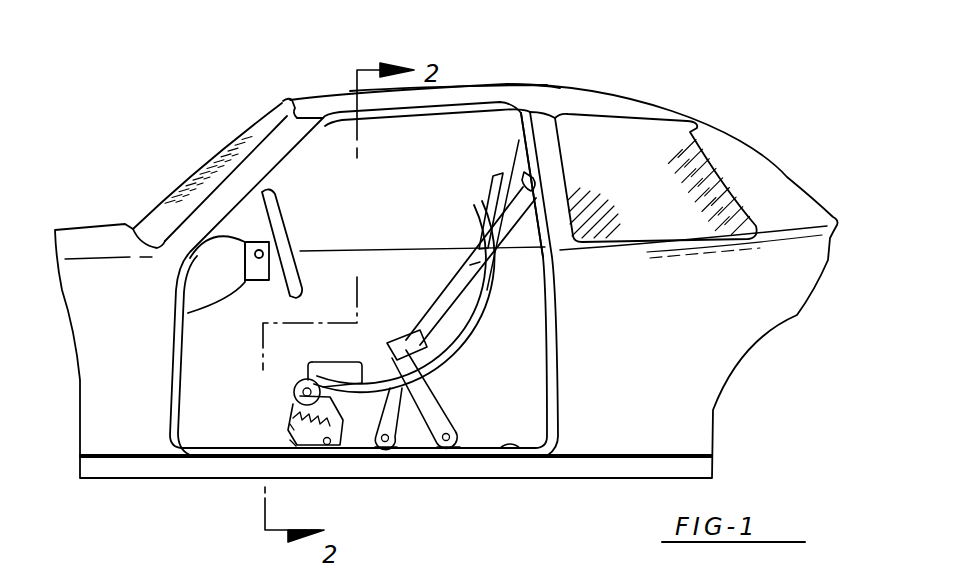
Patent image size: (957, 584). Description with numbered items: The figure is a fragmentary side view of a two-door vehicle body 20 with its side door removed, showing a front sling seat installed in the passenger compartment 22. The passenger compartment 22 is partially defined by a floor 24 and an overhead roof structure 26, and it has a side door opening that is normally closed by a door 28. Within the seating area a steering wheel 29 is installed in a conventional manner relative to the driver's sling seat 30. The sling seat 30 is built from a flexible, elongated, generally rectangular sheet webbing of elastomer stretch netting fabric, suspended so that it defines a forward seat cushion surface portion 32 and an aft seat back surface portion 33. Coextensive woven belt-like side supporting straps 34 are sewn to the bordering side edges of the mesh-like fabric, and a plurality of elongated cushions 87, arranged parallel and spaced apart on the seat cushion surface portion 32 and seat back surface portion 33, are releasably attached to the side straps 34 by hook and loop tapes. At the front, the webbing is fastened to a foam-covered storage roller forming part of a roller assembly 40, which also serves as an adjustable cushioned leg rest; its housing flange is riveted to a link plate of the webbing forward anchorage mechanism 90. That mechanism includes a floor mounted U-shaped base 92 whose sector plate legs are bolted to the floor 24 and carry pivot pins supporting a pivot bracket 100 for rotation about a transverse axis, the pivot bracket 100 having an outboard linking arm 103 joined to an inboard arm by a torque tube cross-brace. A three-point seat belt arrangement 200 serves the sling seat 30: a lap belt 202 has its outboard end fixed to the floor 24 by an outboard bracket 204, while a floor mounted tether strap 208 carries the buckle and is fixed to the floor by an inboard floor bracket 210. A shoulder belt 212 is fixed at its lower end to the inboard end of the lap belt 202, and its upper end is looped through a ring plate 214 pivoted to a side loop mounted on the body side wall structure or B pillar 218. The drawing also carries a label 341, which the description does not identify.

The vehicle body 20 is at (693, 104).
The passenger compartment 22 is at (180, 433).
The floor 24 is at (510, 445).
The overhead roof structure 26 is at (547, 85).
The door 28 is at (547, 360).
The steering wheel 29 is at (268, 193).
The sling seat 30 is at (444, 232).
The forward seat cushion surface portion 32 is at (363, 383).
The aft seat back surface portion 33 is at (443, 273).
The side supporting straps 34 is at (480, 282).
The roller assembly 40 is at (284, 384).
The elongated cushions 87 is at (480, 263).
The webbing forward anchorage mechanism 90 is at (274, 430).
The U-shaped base 92 is at (273, 442).
The pivot bracket 100 is at (281, 410).
The outboard linking arm 103 is at (343, 420).
The three-point seat belt arrangement 200 is at (455, 420).
The lap belt 202 is at (372, 355).
The outboard bracket 204 is at (460, 447).
The tether strap 208 is at (404, 409).
The inboard floor bracket 210 is at (392, 443).
The shoulder belt 212 is at (477, 228).
The ring plate 214 is at (520, 174).
The B pillar 218 is at (552, 140).
The header 341 is at (523, 173).